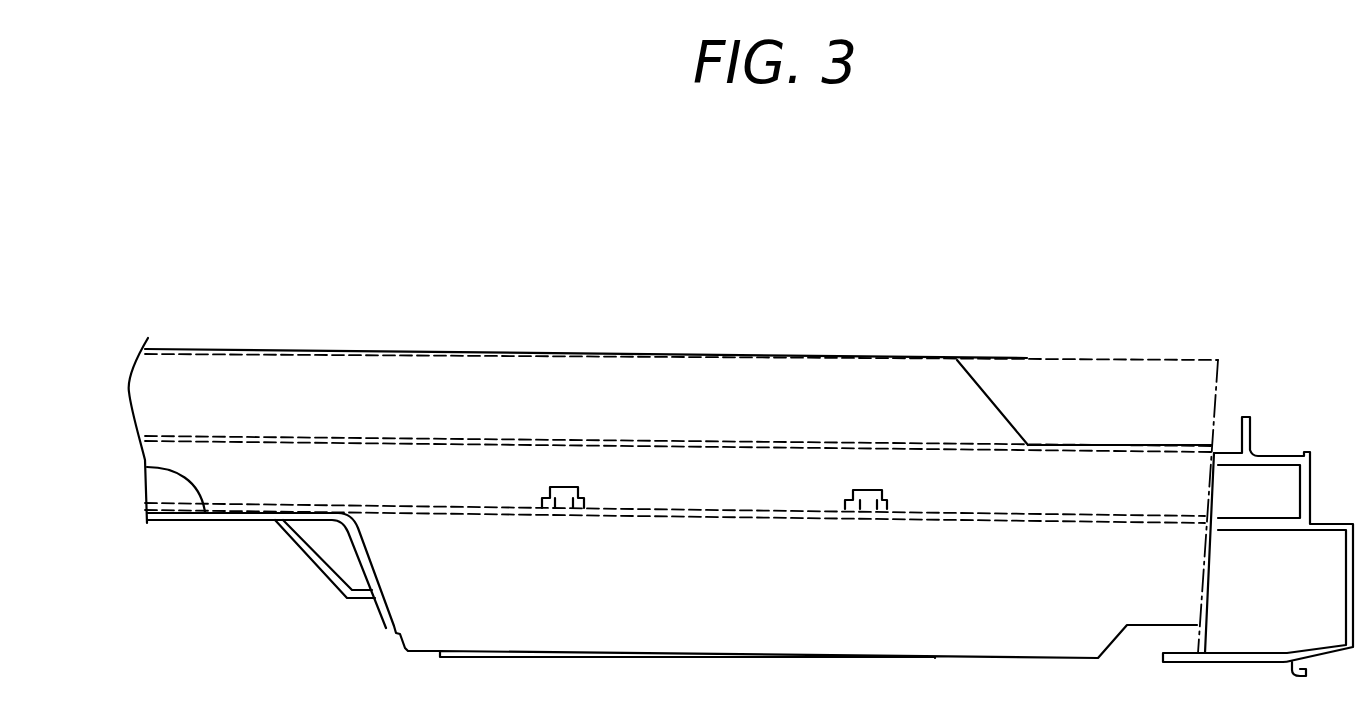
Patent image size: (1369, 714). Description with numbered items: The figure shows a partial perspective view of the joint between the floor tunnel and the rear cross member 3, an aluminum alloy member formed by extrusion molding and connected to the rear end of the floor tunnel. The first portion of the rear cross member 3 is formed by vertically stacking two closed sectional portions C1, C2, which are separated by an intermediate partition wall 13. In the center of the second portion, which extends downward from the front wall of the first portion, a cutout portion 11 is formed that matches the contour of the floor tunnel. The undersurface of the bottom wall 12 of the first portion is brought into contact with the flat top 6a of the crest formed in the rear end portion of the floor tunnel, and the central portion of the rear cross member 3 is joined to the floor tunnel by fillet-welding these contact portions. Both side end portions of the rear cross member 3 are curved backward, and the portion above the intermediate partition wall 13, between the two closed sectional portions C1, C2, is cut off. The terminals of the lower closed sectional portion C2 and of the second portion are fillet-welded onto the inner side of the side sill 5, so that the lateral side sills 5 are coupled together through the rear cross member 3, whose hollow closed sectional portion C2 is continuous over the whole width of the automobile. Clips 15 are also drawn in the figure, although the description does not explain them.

The rear cross member 3 is at (740, 337).
The side sill 5 is at (1310, 492).
The flat top 6a is at (150, 467).
The cutout portion 11 is at (307, 521).
The bottom wall 12 is at (717, 513).
The intermediate partition wall 13 is at (1100, 445).
The clip 15 is at (566, 487).
The upper closed sectional portion C1 is at (948, 392).
The lower closed sectional portion C2 is at (1170, 470).